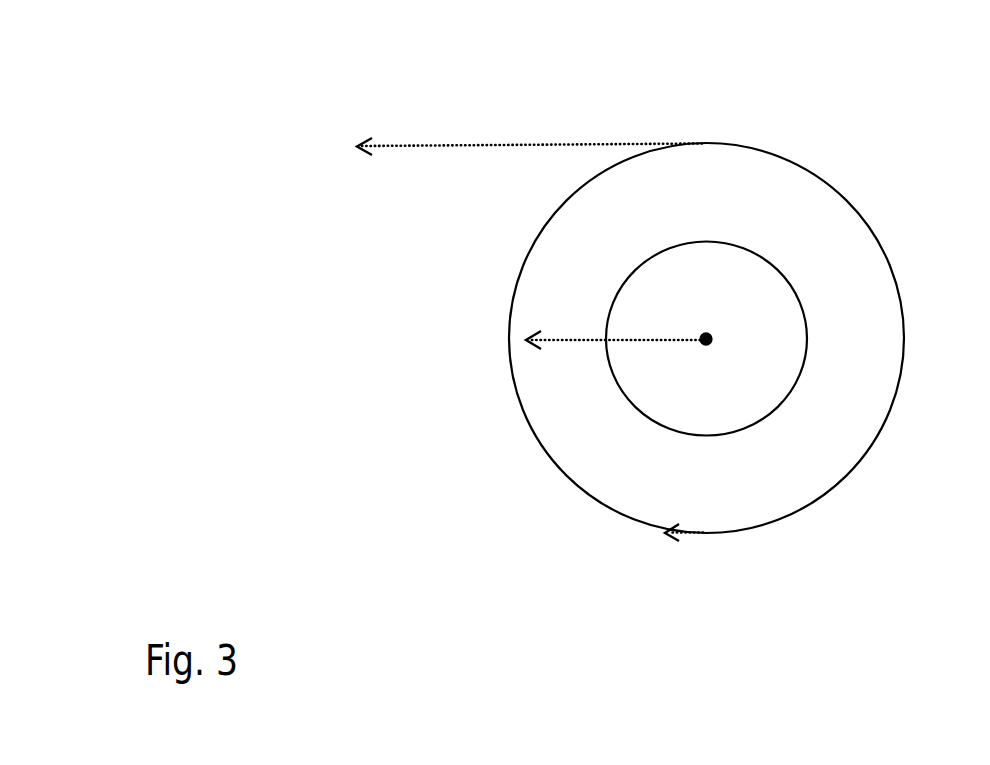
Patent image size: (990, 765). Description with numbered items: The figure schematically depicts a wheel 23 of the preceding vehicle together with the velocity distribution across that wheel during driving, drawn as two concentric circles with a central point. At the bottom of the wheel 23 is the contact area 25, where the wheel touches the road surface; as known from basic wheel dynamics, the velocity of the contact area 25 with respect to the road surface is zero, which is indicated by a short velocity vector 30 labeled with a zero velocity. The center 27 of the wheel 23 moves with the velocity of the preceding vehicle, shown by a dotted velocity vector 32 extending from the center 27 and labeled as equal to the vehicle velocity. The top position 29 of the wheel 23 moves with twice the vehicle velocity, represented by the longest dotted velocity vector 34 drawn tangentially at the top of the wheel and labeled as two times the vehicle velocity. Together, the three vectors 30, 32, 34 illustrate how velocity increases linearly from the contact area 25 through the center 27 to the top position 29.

The wheel 23 is at (838, 247).
The contact area 25 is at (707, 538).
The center 27 is at (703, 344).
The top position 29 is at (708, 143).
The velocity vector at contact point 30 is at (673, 545).
The velocity vector at wheel center 32 is at (598, 339).
The velocity vector at top of wheel 34 is at (505, 143).